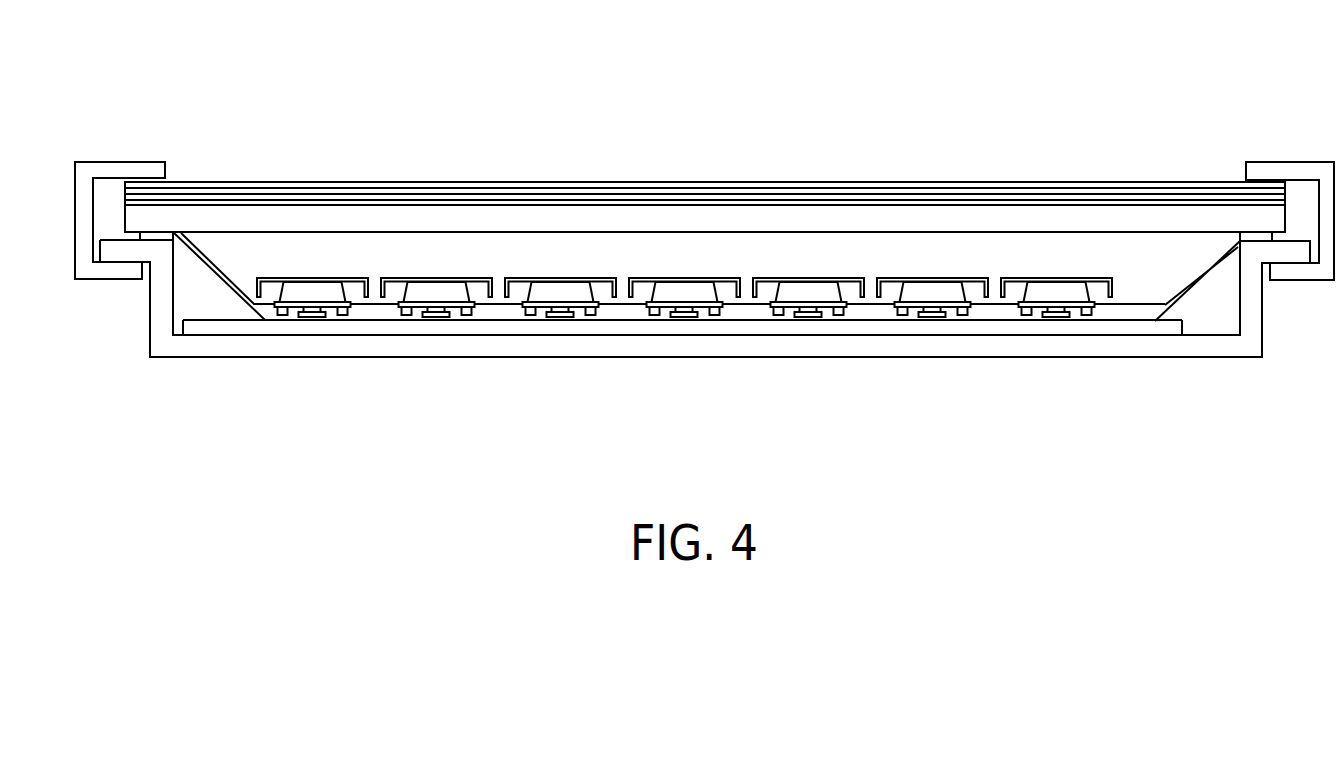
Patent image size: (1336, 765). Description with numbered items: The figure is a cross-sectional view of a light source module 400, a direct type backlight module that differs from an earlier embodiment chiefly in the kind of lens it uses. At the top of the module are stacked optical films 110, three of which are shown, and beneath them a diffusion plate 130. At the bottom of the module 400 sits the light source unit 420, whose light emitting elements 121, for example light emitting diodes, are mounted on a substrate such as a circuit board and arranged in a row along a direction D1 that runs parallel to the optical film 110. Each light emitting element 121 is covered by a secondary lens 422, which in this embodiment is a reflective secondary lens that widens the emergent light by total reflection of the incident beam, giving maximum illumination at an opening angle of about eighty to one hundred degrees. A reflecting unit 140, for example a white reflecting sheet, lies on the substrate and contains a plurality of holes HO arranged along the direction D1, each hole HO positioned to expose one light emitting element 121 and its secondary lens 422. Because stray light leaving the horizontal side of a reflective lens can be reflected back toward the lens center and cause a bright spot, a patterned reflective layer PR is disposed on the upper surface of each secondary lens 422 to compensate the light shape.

The light source module 400 is at (704, 294).
The optical film 110 is at (1110, 202).
The diffusion plate 130 is at (1203, 218).
The reflecting unit 140 is at (986, 313).
The light source unit 420 is at (684, 294).
The secondary lens 422 is at (911, 292).
The light emitting element 121 is at (926, 313).
The patterned reflective layer PR is at (912, 277).
The hole HO is at (932, 265).
The direction D1 is at (675, 78).